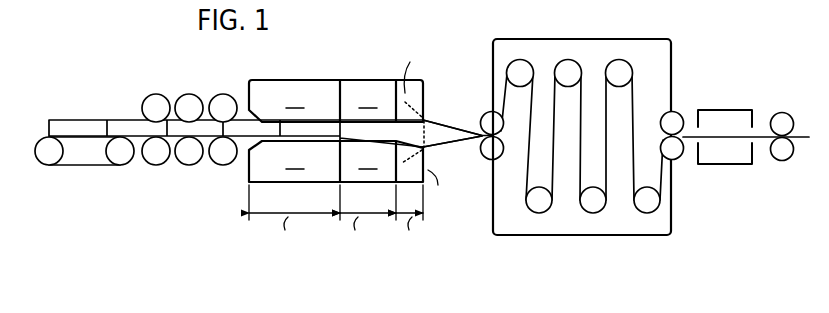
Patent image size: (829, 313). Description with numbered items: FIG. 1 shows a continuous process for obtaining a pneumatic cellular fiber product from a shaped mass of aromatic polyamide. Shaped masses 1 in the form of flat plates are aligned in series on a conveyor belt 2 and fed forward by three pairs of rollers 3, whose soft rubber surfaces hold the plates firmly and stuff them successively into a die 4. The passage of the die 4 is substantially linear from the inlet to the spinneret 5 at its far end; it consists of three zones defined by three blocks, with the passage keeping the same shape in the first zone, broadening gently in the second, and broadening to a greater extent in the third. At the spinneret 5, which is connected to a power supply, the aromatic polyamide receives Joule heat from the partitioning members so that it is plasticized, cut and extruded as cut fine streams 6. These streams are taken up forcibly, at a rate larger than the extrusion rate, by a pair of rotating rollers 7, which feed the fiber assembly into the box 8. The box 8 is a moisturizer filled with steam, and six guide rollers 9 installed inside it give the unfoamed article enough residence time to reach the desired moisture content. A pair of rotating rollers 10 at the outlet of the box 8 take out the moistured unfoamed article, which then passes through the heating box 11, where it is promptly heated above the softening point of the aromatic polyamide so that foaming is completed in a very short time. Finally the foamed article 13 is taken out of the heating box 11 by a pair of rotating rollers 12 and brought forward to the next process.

The shaped mass 1 is at (83, 118).
The conveyor belt 2 is at (90, 168).
The pair of rollers 3 is at (171, 90).
The die 4 is at (294, 79).
The spinneret 5 is at (427, 128).
The cut fine streams 6 is at (453, 138).
The pair of rotating rollers 7 is at (489, 118).
The box 8 is at (514, 39).
The guide rollers 9 is at (569, 68).
The pair of rotating rollers 10 is at (678, 118).
The heating box 11 is at (737, 109).
The pair of rotating rollers 12 is at (792, 112).
The foamed article 13 is at (799, 145).